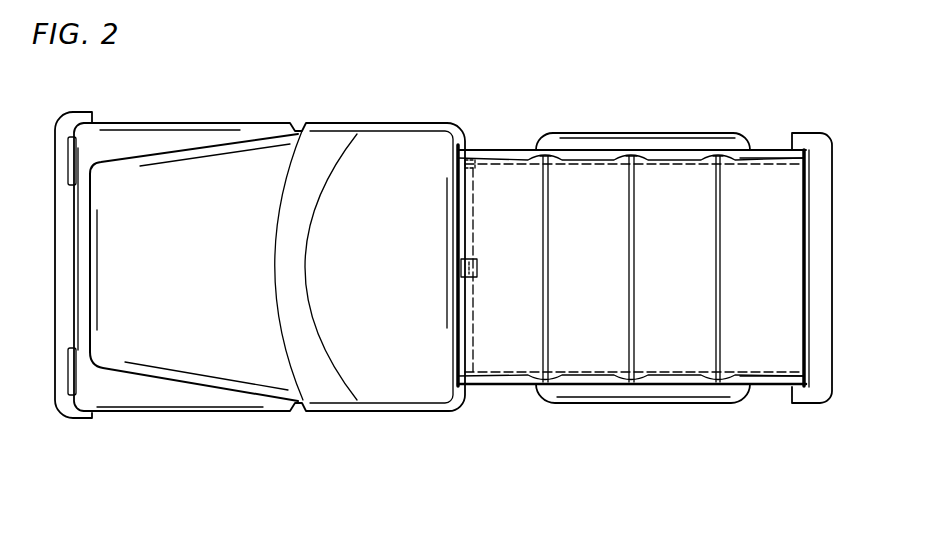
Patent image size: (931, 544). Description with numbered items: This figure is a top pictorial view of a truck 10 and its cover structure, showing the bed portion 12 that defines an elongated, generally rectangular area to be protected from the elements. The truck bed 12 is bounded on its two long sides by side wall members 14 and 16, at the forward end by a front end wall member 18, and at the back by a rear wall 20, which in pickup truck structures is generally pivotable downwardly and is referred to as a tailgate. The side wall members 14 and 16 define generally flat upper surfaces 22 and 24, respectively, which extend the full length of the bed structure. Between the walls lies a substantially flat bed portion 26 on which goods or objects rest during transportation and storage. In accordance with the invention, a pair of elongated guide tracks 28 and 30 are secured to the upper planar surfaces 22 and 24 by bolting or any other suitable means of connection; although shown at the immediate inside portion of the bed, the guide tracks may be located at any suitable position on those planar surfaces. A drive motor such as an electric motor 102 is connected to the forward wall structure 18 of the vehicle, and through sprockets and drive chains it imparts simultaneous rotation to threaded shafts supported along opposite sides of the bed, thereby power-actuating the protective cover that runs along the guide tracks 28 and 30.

The truck 10 is at (373, 142).
The bed portion 12 is at (812, 147).
The side wall member 14 is at (510, 150).
The side wall member 16 is at (507, 386).
The front end wall member 18 is at (460, 218).
The rear wall 20 is at (807, 253).
The upper surface 22 is at (763, 153).
The upper surface 24 is at (765, 385).
The flat bed portion 26 is at (670, 268).
The guide track 28 is at (573, 160).
The guide track 30 is at (577, 370).
The electric motor 102 is at (477, 281).